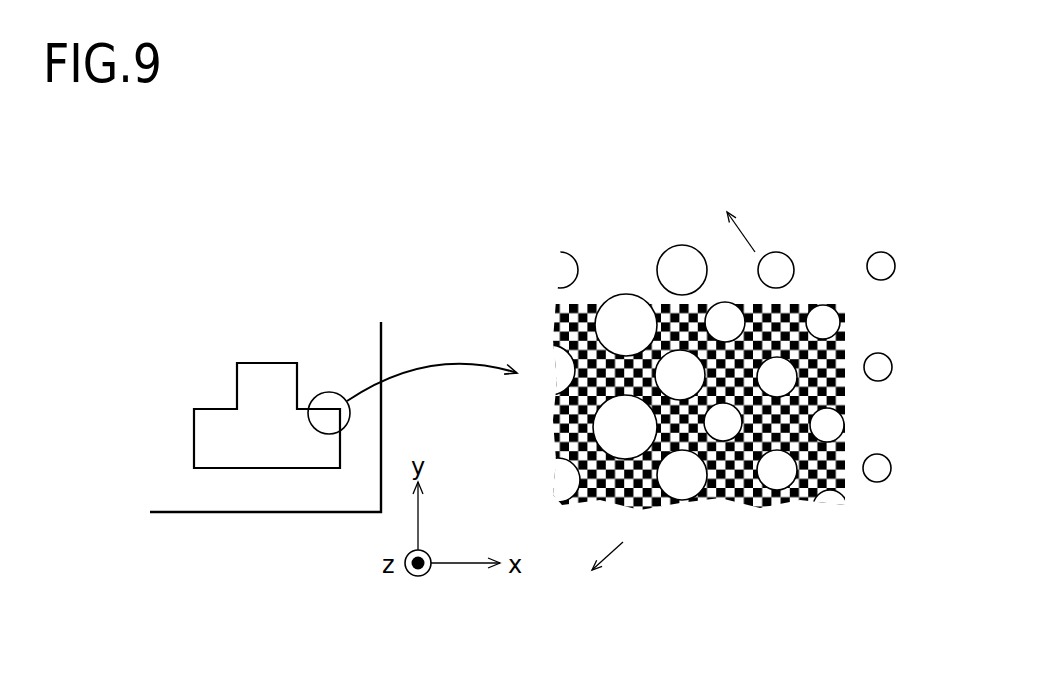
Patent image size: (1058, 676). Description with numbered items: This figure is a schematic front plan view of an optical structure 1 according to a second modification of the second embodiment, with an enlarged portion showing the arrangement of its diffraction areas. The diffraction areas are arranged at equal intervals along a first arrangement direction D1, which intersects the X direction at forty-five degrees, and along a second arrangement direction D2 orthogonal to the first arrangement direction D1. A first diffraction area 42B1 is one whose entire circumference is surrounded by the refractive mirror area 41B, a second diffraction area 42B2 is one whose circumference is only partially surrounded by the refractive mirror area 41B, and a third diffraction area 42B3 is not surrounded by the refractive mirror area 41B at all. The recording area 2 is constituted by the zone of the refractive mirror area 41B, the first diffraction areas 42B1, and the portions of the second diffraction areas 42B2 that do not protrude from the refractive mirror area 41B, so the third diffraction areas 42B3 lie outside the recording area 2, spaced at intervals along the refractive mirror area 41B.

The electronic device / laminated structure 1 is at (197, 292).
The recording area 2 is at (922, 242).
The refractive mirror area 41B is at (715, 492).
The first diffraction area 42B1 is at (553, 392).
The second diffraction area 42B2 is at (625, 292).
The third diffraction area 42B3 is at (885, 480).
The first arrangement direction D1 is at (595, 571).
The second arrangement direction D2 is at (732, 217).